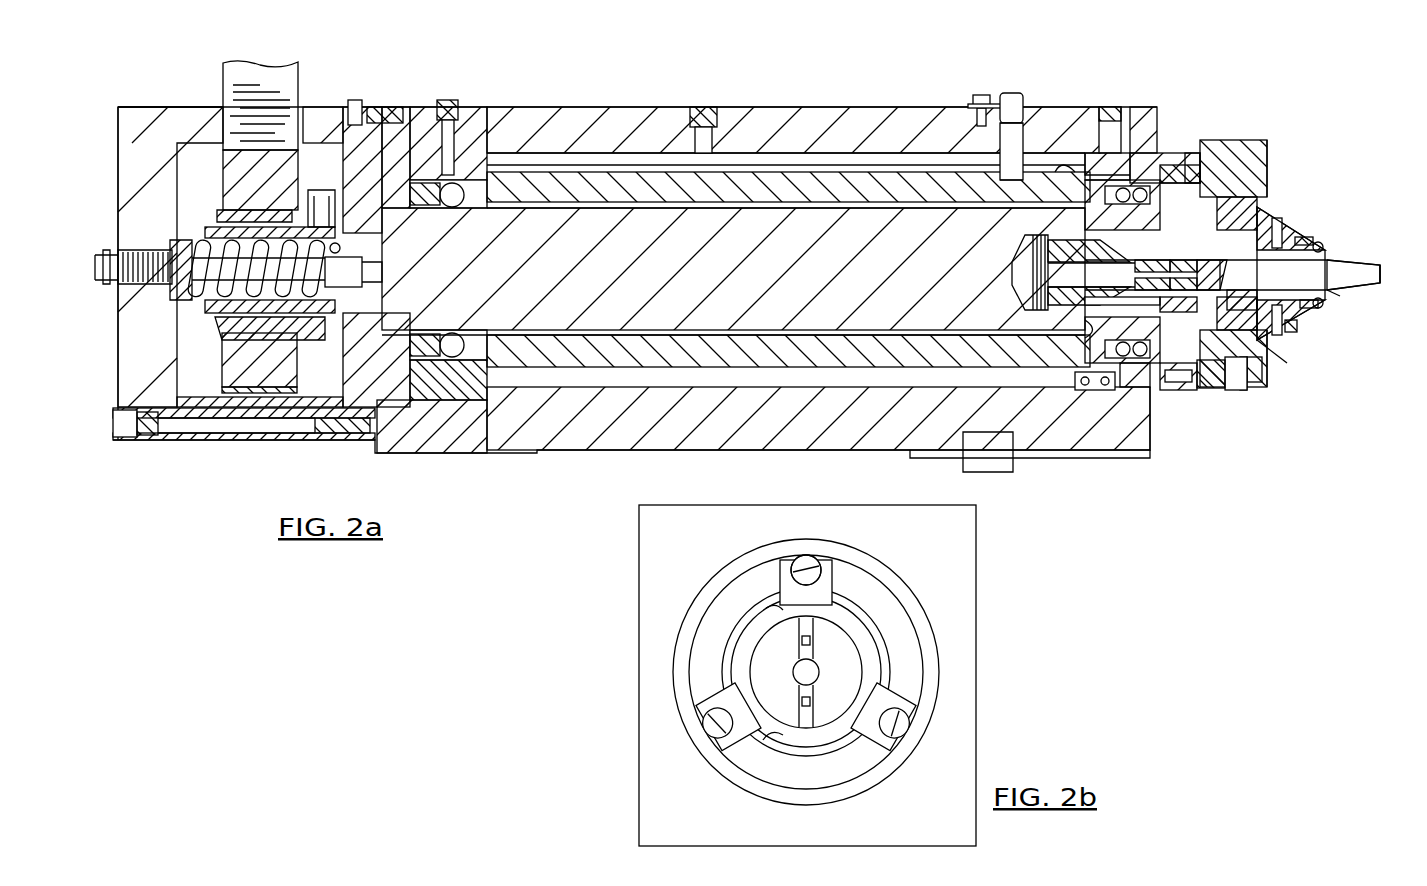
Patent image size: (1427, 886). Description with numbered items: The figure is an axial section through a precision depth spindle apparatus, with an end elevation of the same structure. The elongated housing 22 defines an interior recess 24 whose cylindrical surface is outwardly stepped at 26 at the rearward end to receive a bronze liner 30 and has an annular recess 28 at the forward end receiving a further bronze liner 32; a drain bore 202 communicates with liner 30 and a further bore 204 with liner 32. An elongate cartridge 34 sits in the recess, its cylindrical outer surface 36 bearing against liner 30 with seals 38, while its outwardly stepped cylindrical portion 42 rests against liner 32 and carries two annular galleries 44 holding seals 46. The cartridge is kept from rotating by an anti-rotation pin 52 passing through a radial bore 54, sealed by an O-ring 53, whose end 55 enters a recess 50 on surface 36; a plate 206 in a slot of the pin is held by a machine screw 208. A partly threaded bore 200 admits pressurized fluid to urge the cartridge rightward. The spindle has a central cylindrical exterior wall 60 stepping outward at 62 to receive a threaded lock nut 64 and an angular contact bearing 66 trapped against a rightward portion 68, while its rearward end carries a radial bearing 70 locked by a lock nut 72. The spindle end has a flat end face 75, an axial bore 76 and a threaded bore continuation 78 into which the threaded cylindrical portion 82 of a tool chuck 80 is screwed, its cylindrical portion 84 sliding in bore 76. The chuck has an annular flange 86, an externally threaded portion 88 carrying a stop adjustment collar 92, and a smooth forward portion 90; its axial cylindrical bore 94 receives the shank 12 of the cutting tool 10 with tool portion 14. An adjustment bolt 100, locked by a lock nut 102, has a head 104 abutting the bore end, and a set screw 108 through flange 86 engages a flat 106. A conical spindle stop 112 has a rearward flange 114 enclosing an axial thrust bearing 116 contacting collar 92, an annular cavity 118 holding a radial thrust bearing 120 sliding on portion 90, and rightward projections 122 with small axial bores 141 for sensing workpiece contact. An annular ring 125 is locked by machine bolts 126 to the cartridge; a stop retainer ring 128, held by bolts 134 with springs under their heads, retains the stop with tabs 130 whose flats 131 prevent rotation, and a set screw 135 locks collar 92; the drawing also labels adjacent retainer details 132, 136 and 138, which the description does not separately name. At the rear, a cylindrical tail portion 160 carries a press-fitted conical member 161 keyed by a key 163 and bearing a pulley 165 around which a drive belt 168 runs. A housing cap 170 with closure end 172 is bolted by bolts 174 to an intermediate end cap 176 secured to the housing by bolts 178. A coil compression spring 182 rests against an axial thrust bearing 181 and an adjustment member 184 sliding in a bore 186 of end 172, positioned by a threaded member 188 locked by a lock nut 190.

In FIG. 2A, the cutting tool 10 is at (1376, 261).
In FIG. 2A, the shank 12 is at (1340, 292).
In FIG. 2A, the tool portion 14 is at (1370, 275).
In FIG. 2B, the tool portion 14 is at (793, 672).
In FIG. 2A, the housing 22 is at (574, 453).
In FIG. 2A, the interior recess 24 is at (624, 150).
In FIG. 2A, the outward step 26 is at (483, 400).
In FIG. 2A, the annular recess 28 is at (1100, 405).
In FIG. 2B, the annular recess 28 is at (903, 602).
In FIG. 2A, the bronze liner 30 is at (420, 130).
In FIG. 2A, the bronze liner 32 is at (1150, 130).
In FIG. 2A, the cartridge 34 is at (887, 175).
In FIG. 2A, the cylindrical outer surface 36 is at (832, 150).
In FIG. 2A, the seals 38 is at (413, 207).
In FIG. 2A, the outwardly stepped cylindrical portion 42 is at (1141, 395).
In FIG. 2A, the annular galleries 44 is at (1085, 172).
In FIG. 2A, the seals 46 is at (1075, 380).
In FIG. 2A, the recess 50 is at (1060, 172).
In FIG. 2A, the anti-rotation pin 52 is at (1015, 100).
In FIG. 2A, the O-ring 53 is at (1000, 135).
In FIG. 2A, the radial bore 54 is at (1025, 115).
In FIG. 2A, the pin end 55 is at (1000, 170).
In FIG. 2A, the central cylindrical exterior wall 60 is at (795, 205).
In FIG. 2A, the outwardly multiple-stepped configuration 62 is at (1137, 232).
In FIG. 2A, the threaded lock nut 64 is at (1060, 320).
In FIG. 2A, the angular contact bearing 66 is at (1120, 215).
In FIG. 2A, the rightward spindle portion 68 is at (1190, 226).
In FIG. 2A, the radial bearing 70 is at (471, 215).
In FIG. 2A, the threaded lock nut 72 is at (431, 222).
In FIG. 2A, the flat end face 75 is at (1245, 182).
In FIG. 2A, the axial bore 76 is at (1150, 294).
In FIG. 2A, the threaded bore continuation 78 is at (1025, 247).
In FIG. 2A, the tool chuck 80 is at (1240, 258).
In FIG. 2A, the threaded cylindrical portion 82 is at (1025, 287).
In FIG. 2A, the cylindrical portion 84 is at (1160, 325).
In FIG. 2A, the annular flange 86 is at (1227, 160).
In FIG. 2A, the externally threaded cylindrical portion 88 is at (1232, 276).
In FIG. 2A, the forward cylindrical portion 90 is at (1330, 260).
In FIG. 2A, the stop adjustment collar 92 is at (1262, 192).
In FIG. 2A, the axial cylindrical bore 94 is at (1165, 262).
In FIG. 2A, the adjustment bolt 100 is at (1132, 288).
In FIG. 2A, the lock nut 102 is at (1188, 262).
In FIG. 2A, the bolt head 104 is at (1120, 252).
In FIG. 2A, the flat 106 is at (1165, 296).
In FIG. 2A, the set screw 108 is at (1257, 302).
In FIG. 2A, the spindle stop 112 is at (1300, 230).
In FIG. 2B, the spindle stop 112 is at (870, 662).
In FIG. 2A, the rearward flange 114 is at (1282, 215).
In FIG. 2A, the axial thrust bearing 116 is at (1280, 338).
In FIG. 2A, the annular cavity 118 is at (1290, 328).
In FIG. 2A, the radial thrust bearing 120 is at (1305, 240).
In FIG. 2A, the rightward projections 122 is at (1322, 245).
In FIG. 2B, the rightward projections 122 is at (813, 650).
In FIG. 2A, the annular ring 125 is at (1197, 150).
In FIG. 2A, the machine bolts 126 is at (1206, 160).
In FIG. 2A, the stop retainer ring 128 is at (1262, 365).
In FIG. 2A, the tabs 130 is at (1290, 205).
In FIG. 2B, the tabs 130 is at (900, 705).
In FIG. 2B, the flats 131 is at (776, 614).
In FIG. 2A, the clamp jaw 132 is at (1247, 385).
In FIG. 2A, the bolts 134 is at (1233, 395).
In FIG. 2B, the bolts 134 is at (813, 560).
In FIG. 2A, the set screw 135 is at (1278, 352).
In FIG. 2A, the screw thread 136 is at (1206, 395).
In FIG. 2A, the screw seat 138 is at (1177, 392).
In FIG. 2A, the axial bore 141 is at (1330, 306).
In FIG. 2A, the cylindrical tail portion 160 is at (218, 340).
In FIG. 2A, the conical member 161 is at (285, 178).
In FIG. 2A, the key 163 is at (228, 212).
In FIG. 2A, the pulley 165 is at (220, 380).
In FIG. 2A, the drive belt 168 is at (270, 70).
In FIG. 2A, the housing cap 170 is at (192, 108).
In FIG. 2A, the closure end 172 is at (125, 135).
In FIG. 2A, the bolts 174 is at (248, 433).
In FIG. 2A, the intermediate end cap 176 is at (353, 107).
In FIG. 2A, the bolts 178 is at (387, 110).
In FIG. 2A, the axial thrust bearing 181 is at (342, 246).
In FIG. 2A, the coil compression spring 182 is at (332, 218).
In FIG. 2A, the adjustment member 184 is at (183, 242).
In FIG. 2A, the bore 186 is at (128, 250).
In FIG. 2A, the threaded member 188 is at (140, 286).
In FIG. 2A, the lock nut 190 is at (106, 252).
In FIG. 2A, the partly threaded bore 200 is at (718, 135).
In FIG. 2A, the drain bore 202 is at (452, 125).
In FIG. 2A, the bore 204 is at (1112, 135).
In FIG. 2A, the plate 206 is at (993, 104).
In FIG. 2A, the machine screw 208 is at (972, 103).